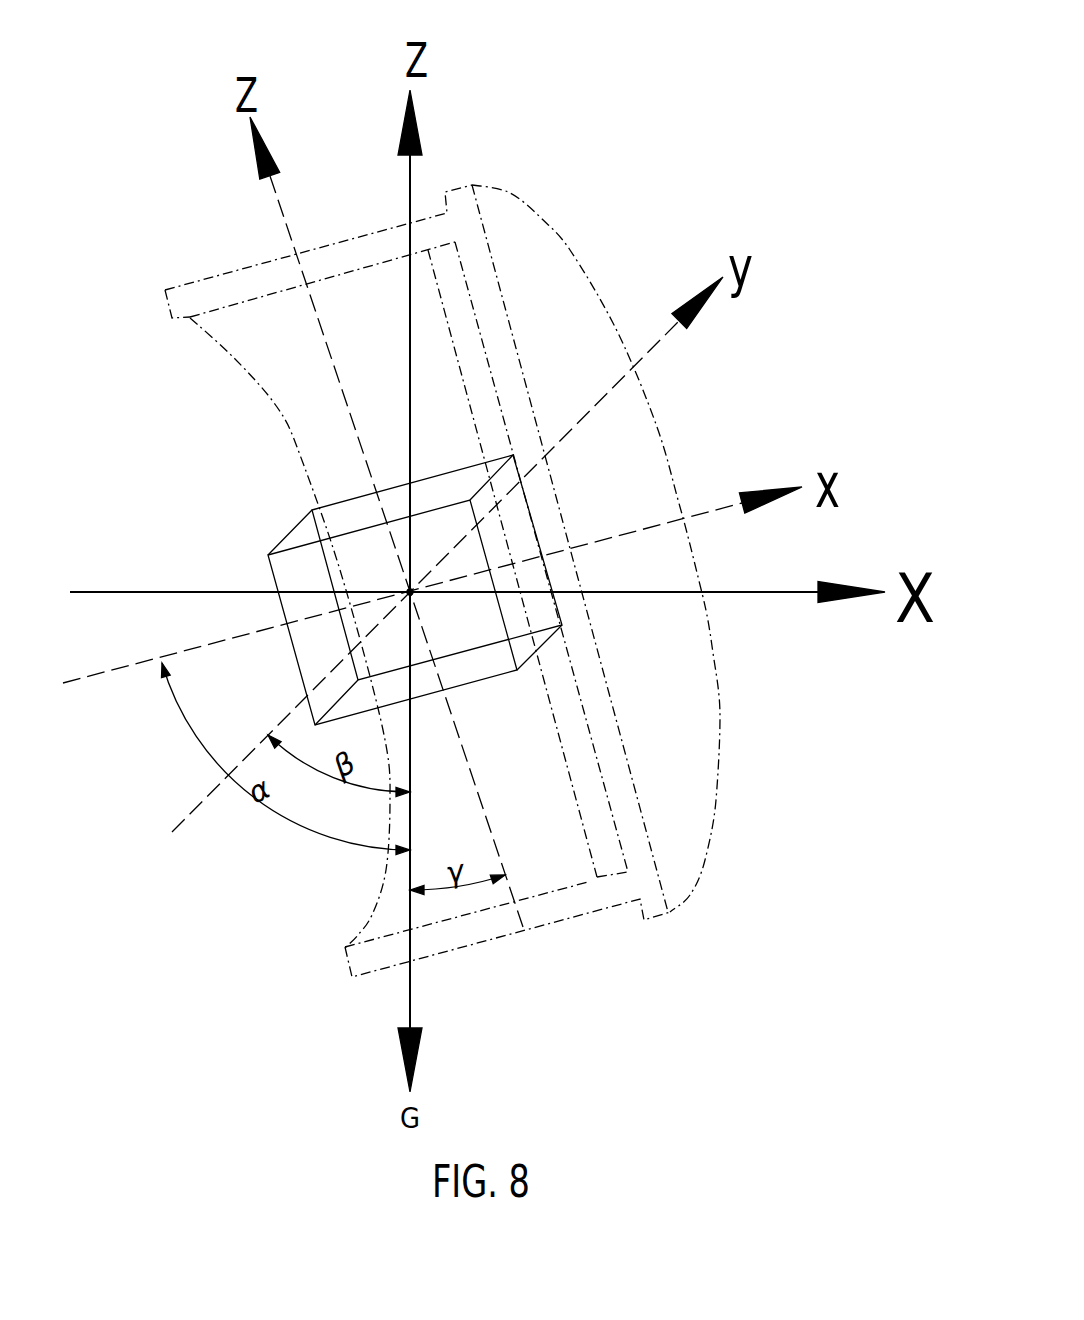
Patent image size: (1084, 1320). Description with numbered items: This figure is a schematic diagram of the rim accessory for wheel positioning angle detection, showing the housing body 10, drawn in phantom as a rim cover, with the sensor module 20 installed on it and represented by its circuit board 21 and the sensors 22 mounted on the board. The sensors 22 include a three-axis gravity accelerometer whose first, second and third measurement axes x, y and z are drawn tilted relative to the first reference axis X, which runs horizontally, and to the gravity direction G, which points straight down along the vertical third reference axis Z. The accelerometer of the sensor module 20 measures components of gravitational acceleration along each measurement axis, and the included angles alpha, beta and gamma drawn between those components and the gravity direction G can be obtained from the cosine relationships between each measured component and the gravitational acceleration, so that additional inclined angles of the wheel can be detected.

The housing body 10 is at (562, 238).
The sensor module 20 is at (363, 559).
The circuit board 21 is at (452, 343).
The sensors 22 is at (328, 527).